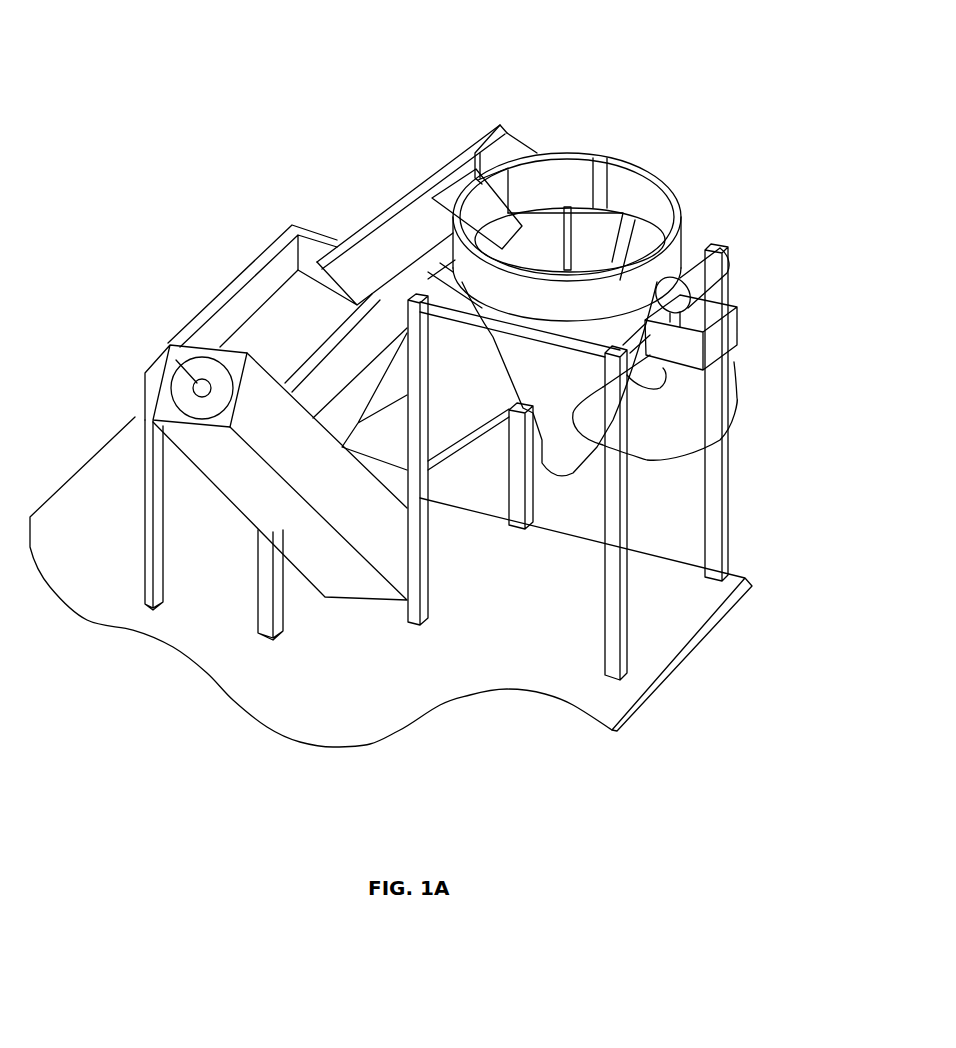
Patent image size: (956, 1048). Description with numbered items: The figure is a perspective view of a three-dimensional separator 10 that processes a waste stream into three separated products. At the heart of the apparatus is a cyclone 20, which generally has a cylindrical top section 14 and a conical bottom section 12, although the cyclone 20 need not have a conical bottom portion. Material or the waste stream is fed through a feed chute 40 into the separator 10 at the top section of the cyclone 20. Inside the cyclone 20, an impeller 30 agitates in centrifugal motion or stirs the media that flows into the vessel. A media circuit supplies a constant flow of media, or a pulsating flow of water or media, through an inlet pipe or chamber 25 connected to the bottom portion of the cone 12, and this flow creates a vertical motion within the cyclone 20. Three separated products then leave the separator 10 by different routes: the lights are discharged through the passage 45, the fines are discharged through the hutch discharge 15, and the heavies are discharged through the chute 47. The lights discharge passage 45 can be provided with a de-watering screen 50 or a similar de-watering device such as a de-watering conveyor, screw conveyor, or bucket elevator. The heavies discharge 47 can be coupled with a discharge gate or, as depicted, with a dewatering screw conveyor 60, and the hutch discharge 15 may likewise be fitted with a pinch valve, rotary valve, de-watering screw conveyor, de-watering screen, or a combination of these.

The three-dimensional separator 10 is at (768, 94).
The conical bottom section 12 is at (557, 393).
The cylindrical top section 14 is at (618, 283).
The hutch discharge 15 is at (575, 465).
The cyclone 20 is at (643, 167).
The inlet pipe or chamber 25 is at (713, 393).
The impeller 30 is at (545, 228).
The feed chute 40 is at (441, 163).
The lights discharge passage 45 is at (418, 217).
The heavies discharge chute 47 is at (453, 413).
The de-watering screen 50 is at (255, 333).
The dewatering screw conveyor 60 is at (323, 490).